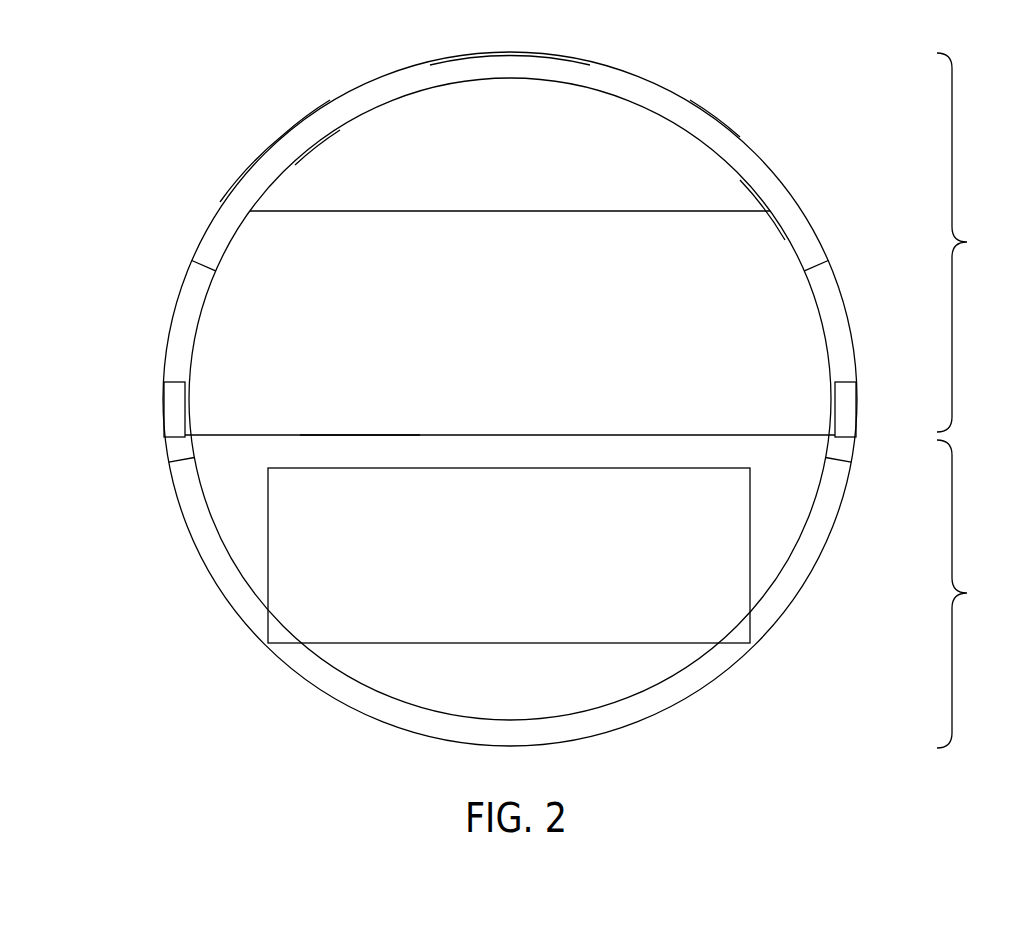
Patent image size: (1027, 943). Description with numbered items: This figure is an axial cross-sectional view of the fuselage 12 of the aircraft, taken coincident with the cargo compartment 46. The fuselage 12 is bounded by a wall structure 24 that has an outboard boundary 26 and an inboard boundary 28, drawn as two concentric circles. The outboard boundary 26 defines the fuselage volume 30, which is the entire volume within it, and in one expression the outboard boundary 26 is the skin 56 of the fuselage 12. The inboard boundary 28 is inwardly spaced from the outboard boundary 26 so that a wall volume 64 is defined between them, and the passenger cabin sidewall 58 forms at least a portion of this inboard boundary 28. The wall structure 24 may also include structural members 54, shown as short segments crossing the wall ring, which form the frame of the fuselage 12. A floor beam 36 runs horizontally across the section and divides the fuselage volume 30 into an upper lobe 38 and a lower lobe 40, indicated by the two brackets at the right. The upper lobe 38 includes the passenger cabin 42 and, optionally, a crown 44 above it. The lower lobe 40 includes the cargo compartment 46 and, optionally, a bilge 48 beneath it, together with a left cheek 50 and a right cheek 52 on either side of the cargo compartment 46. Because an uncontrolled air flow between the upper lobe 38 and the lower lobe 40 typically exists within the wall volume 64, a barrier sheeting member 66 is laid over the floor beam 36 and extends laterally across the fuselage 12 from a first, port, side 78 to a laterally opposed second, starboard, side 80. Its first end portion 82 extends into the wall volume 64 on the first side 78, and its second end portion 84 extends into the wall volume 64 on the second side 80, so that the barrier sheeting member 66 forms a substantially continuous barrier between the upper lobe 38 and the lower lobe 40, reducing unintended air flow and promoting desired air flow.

The fuselage 12 is at (623, 70).
The wall structure 24 is at (220, 202).
The outboard boundary 26 is at (283, 135).
The inboard boundary 28 is at (295, 165).
The fuselage volume 30 is at (350, 150).
The floor beam 36 is at (587, 450).
The upper lobe 38 is at (969, 242).
The lower lobe 40 is at (970, 594).
The passenger cabin 42 is at (496, 400).
The crown 44 is at (496, 203).
The cargo compartment 46 is at (494, 625).
The bilge 48 is at (526, 715).
The left cheek 50 is at (226, 533).
The right cheek 52 is at (762, 533).
The structural members 54 is at (202, 267).
The skin 56 is at (740, 137).
The passenger cabin sidewall 58 is at (785, 240).
The wall volume 64 is at (460, 70).
The barrier sheeting member 66 is at (387, 435).
The first side 78 is at (192, 636).
The second side 80 is at (830, 636).
The first end portion 82 is at (172, 381).
The second end portion 84 is at (850, 380).